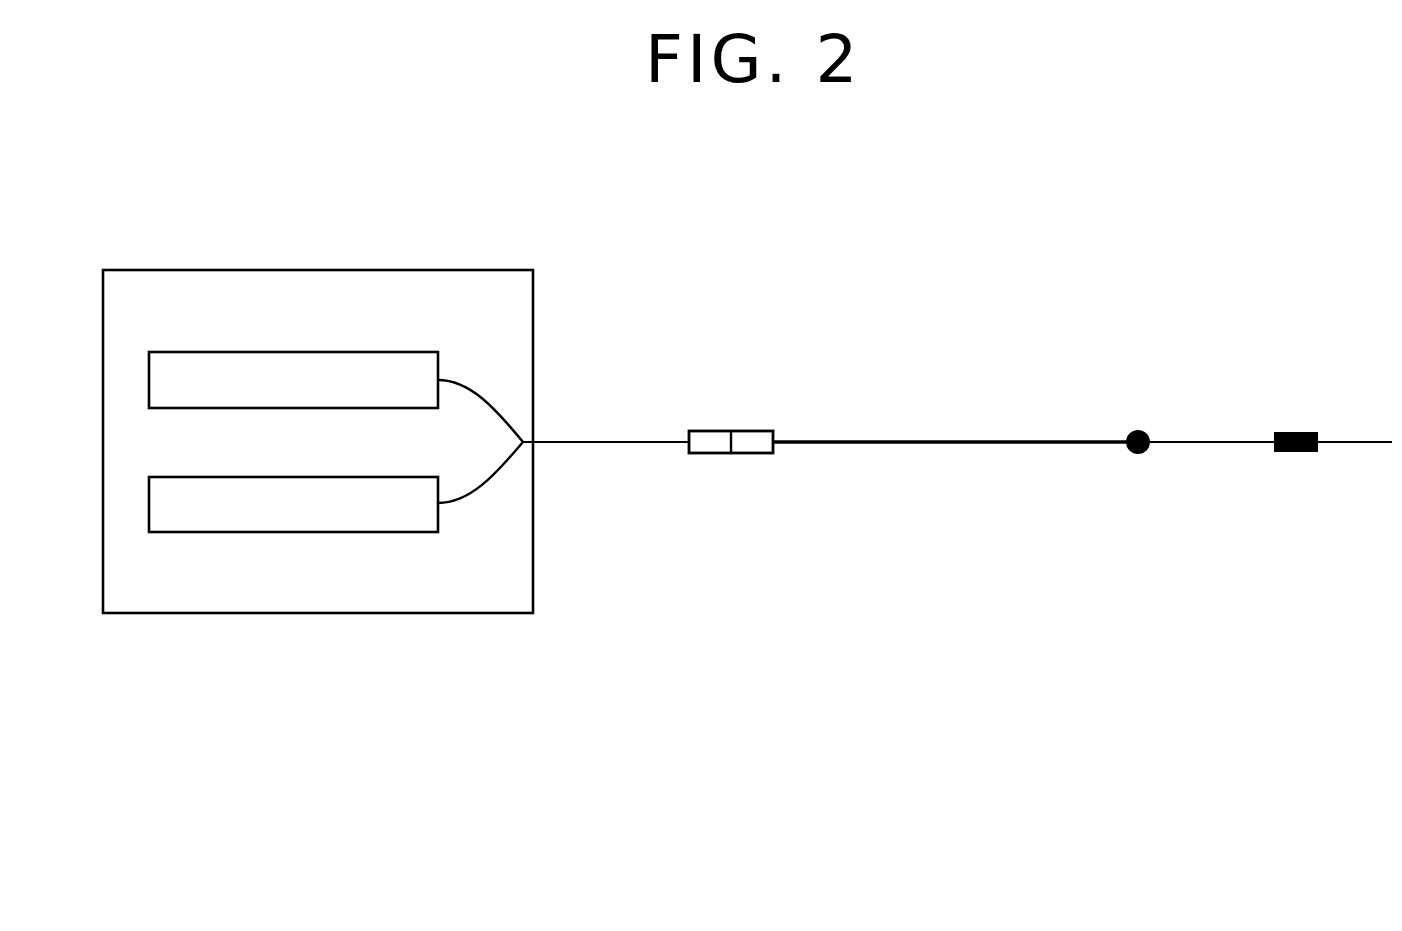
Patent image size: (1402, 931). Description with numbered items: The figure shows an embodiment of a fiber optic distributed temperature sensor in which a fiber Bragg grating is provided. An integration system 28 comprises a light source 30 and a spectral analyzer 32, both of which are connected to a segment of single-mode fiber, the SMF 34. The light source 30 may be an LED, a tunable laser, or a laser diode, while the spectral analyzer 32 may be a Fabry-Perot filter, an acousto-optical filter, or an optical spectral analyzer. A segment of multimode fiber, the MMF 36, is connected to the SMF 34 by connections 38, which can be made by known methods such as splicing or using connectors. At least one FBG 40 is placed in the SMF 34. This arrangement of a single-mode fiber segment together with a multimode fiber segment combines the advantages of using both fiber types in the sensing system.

The integration system 28 is at (400, 270).
The light source 30 is at (332, 352).
The spectral analyzer 32 is at (335, 477).
The SMF 34 is at (609, 440).
The MMF 36 is at (938, 445).
The connections 38 is at (733, 430).
The FBG 40 is at (1296, 430).